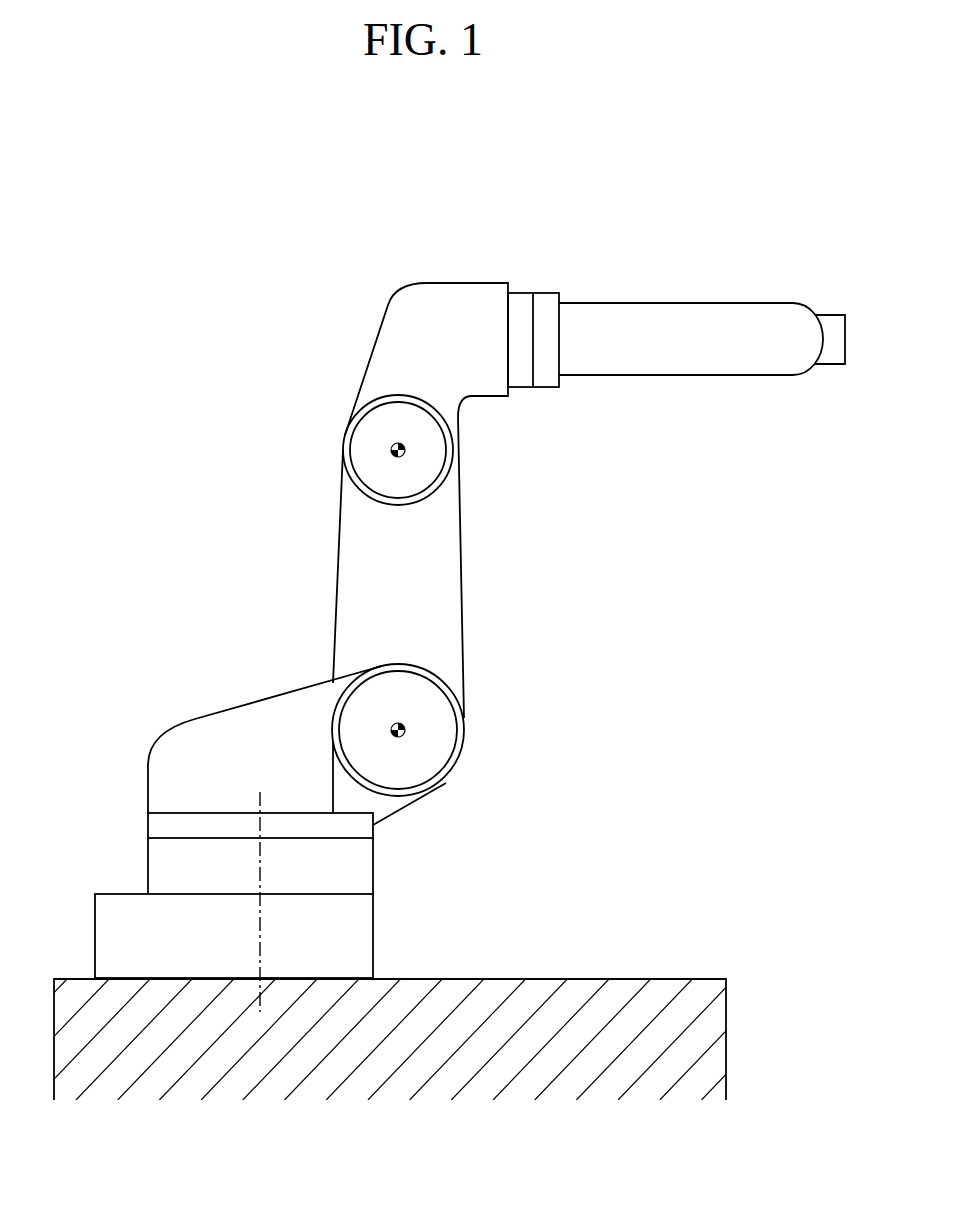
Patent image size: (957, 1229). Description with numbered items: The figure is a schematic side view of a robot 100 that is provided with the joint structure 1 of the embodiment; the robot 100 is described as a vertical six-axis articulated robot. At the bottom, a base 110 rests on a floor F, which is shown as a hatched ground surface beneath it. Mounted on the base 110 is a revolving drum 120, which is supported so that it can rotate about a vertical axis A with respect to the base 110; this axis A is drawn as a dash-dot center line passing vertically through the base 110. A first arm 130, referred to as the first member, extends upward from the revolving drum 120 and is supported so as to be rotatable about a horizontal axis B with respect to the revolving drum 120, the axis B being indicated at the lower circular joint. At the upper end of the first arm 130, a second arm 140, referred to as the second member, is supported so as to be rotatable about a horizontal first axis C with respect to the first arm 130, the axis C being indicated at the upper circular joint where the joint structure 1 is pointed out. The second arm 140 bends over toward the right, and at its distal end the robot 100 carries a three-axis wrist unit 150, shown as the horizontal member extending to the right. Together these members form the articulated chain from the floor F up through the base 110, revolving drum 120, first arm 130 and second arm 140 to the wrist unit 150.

The robot 100 is at (244, 322).
The joint structure 1 is at (325, 445).
The base 110 is at (391, 930).
The revolving drum 120 is at (210, 696).
The first arm 130 is at (481, 585).
The second arm 140 is at (458, 266).
The three-axis wrist unit 150 is at (814, 384).
The vertical axis A is at (260, 927).
The horizontal axis B is at (405, 735).
The first axis C is at (405, 456).
The floor F is at (610, 979).